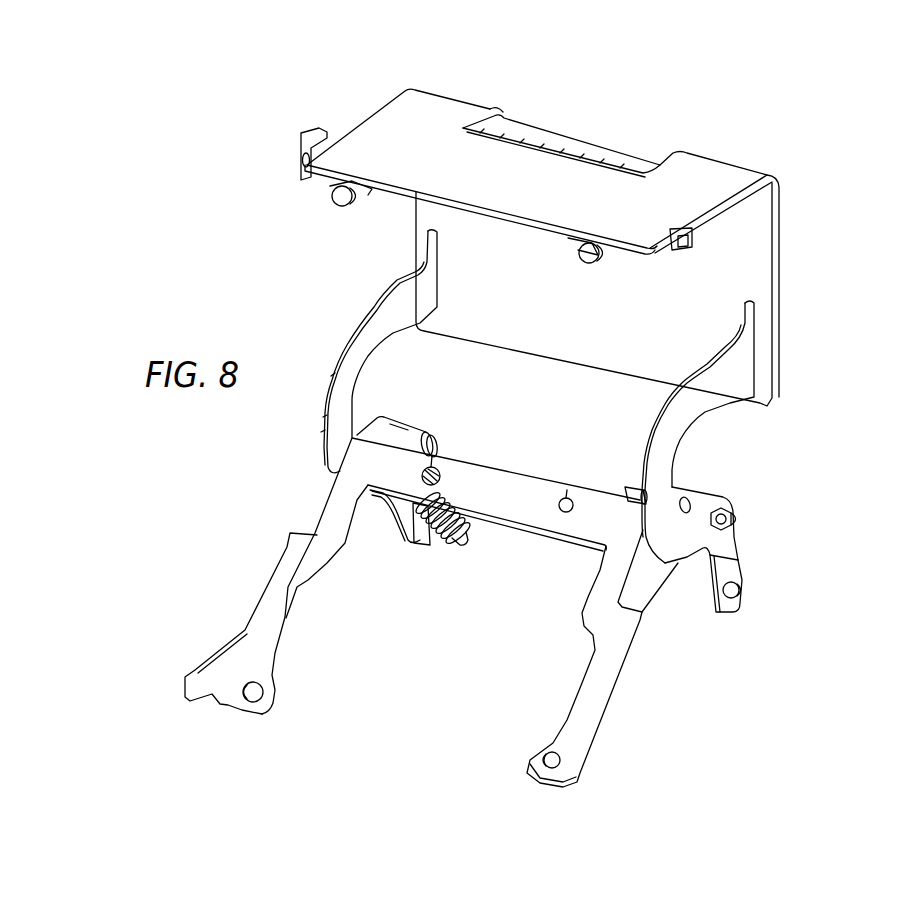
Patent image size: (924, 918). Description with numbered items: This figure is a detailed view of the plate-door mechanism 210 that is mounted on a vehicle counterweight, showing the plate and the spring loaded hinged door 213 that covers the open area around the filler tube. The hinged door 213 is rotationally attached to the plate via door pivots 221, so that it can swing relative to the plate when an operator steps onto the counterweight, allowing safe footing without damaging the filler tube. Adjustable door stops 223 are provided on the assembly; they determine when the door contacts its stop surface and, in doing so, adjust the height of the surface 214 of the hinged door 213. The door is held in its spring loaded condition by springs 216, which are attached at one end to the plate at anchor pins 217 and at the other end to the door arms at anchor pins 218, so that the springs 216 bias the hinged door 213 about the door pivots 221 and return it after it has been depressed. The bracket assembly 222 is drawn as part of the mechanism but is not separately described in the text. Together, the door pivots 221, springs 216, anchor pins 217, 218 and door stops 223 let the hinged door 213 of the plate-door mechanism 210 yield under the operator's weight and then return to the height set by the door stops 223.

The plate-door mechanism 210 is at (508, 86).
The hinged door 213 is at (748, 168).
The surface of the hinged door 214 is at (778, 280).
The springs 216 is at (450, 521).
The anchor pins 217 is at (633, 487).
The anchor pins 218 is at (427, 530).
The door pivots 221 is at (735, 518).
The bracket assembly 222 is at (733, 485).
The adjustable door stops 223 is at (332, 203).